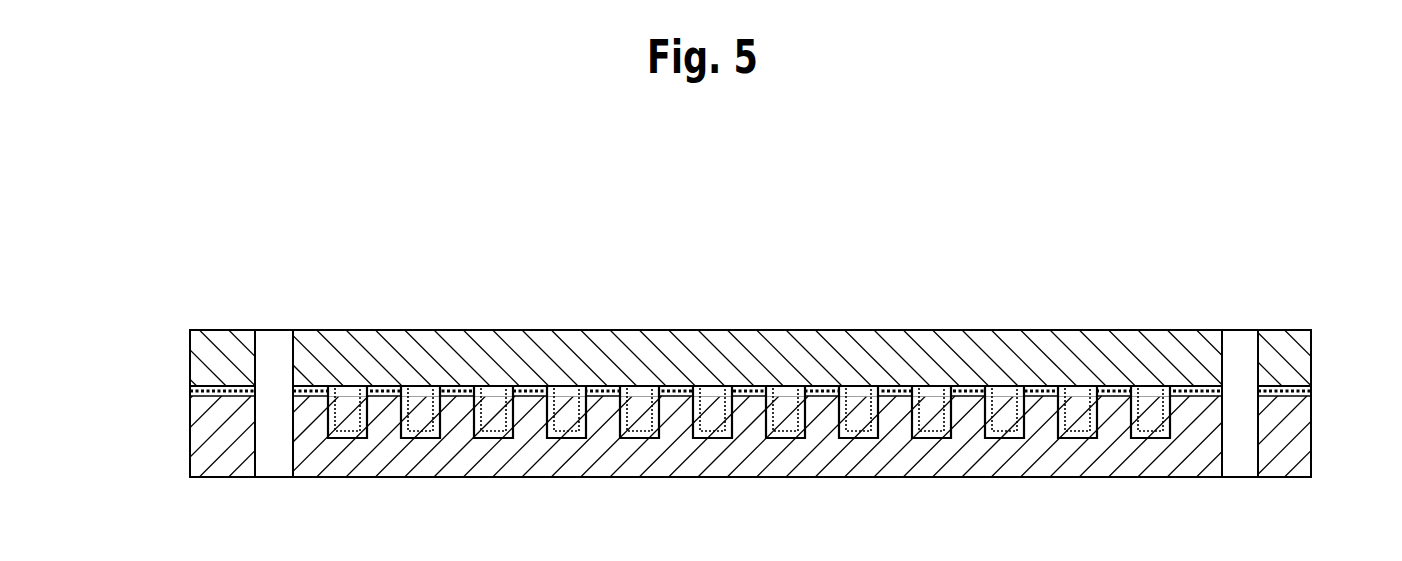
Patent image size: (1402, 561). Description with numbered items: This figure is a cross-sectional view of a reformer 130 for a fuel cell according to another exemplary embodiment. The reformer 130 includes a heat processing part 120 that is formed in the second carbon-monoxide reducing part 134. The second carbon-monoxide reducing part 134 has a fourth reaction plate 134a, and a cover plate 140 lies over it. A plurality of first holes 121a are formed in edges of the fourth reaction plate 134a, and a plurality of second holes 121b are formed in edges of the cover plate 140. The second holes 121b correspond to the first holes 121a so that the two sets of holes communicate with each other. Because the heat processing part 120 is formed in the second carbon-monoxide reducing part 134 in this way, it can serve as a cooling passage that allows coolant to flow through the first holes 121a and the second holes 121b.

The heat processing part 120 is at (700, 403).
The first holes 121a is at (268, 432).
The second holes 121b is at (267, 352).
The reformer 130 is at (730, 191).
The second carbon-monoxide reducing part 134 is at (1318, 305).
The fourth reaction plate 134a is at (980, 478).
The cover plate 140 is at (1005, 331).